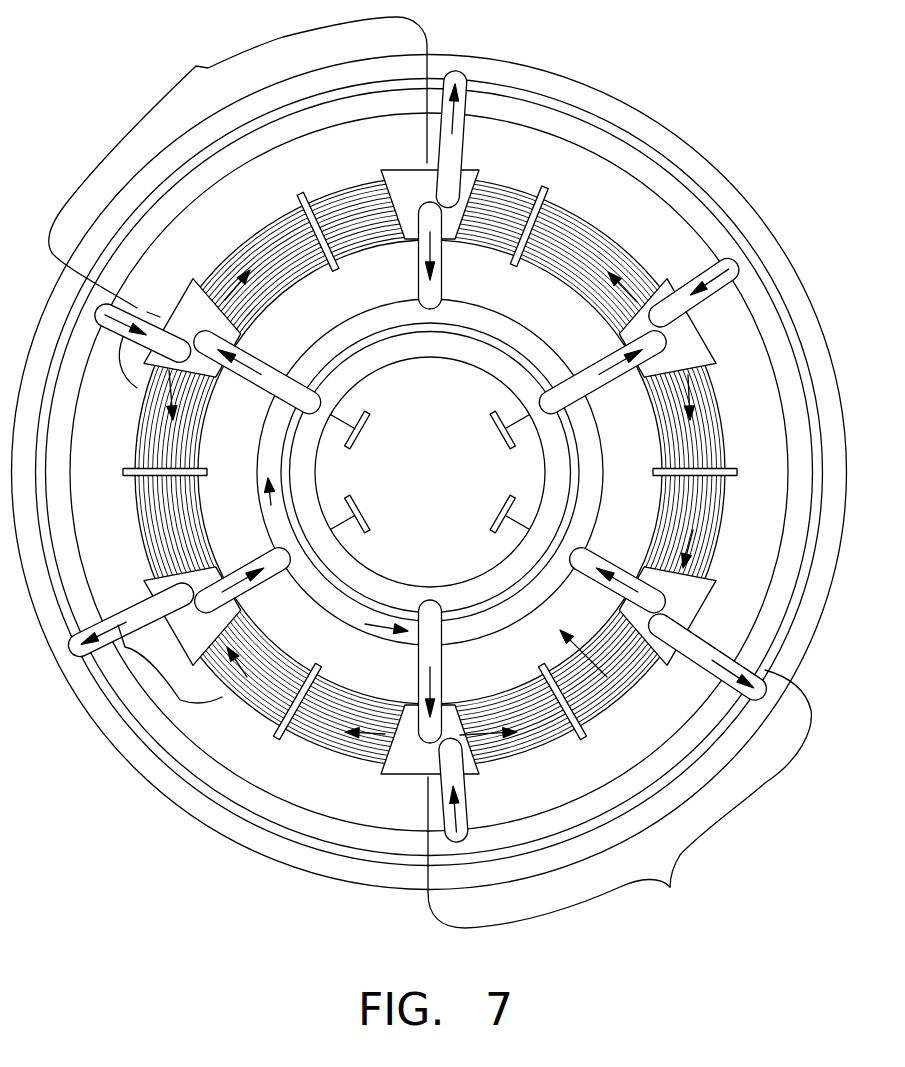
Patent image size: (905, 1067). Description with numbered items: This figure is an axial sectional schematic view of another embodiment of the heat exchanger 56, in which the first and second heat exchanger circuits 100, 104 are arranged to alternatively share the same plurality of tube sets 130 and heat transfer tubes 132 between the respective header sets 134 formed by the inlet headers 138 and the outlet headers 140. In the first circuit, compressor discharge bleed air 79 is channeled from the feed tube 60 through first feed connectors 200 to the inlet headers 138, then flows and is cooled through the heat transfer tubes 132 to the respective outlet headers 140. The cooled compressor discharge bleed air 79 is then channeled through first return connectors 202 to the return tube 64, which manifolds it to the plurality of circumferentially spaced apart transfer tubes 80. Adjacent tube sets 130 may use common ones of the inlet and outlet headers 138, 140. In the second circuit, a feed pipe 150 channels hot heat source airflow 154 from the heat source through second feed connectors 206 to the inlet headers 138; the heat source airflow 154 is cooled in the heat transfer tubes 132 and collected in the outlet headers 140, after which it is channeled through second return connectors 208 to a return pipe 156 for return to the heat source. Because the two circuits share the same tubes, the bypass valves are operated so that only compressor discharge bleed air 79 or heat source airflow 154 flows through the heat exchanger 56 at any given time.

The heat exchanger 56 is at (302, 191).
The feed tube 60 is at (545, 472).
The return tube 64 is at (355, 300).
The compressor discharge bleed air 79 is at (614, 352).
The transfer tubes 80 is at (338, 432).
The first heat exchanger circuit 100 is at (598, 345).
The second heat exchanger circuit 104 is at (478, 127).
The tube sets 130 is at (137, 307).
The heat transfer tubes 132 is at (518, 197).
The header sets 134 is at (196, 68).
The inlet headers 138 is at (240, 332).
The outlet headers 140 is at (472, 166).
The feed pipe 150 is at (368, 372).
The heat source airflow 154 is at (463, 815).
The return pipe 156 is at (785, 247).
The first feed connectors 200 is at (441, 672).
The first return connectors 202 is at (248, 605).
The second feed connectors 206 is at (482, 770).
The second return connectors 208 is at (628, 695).